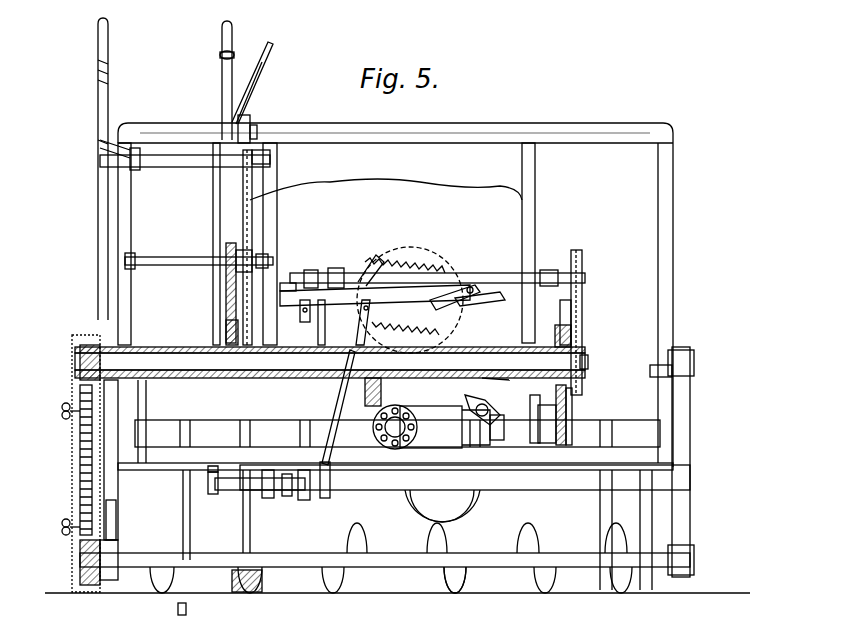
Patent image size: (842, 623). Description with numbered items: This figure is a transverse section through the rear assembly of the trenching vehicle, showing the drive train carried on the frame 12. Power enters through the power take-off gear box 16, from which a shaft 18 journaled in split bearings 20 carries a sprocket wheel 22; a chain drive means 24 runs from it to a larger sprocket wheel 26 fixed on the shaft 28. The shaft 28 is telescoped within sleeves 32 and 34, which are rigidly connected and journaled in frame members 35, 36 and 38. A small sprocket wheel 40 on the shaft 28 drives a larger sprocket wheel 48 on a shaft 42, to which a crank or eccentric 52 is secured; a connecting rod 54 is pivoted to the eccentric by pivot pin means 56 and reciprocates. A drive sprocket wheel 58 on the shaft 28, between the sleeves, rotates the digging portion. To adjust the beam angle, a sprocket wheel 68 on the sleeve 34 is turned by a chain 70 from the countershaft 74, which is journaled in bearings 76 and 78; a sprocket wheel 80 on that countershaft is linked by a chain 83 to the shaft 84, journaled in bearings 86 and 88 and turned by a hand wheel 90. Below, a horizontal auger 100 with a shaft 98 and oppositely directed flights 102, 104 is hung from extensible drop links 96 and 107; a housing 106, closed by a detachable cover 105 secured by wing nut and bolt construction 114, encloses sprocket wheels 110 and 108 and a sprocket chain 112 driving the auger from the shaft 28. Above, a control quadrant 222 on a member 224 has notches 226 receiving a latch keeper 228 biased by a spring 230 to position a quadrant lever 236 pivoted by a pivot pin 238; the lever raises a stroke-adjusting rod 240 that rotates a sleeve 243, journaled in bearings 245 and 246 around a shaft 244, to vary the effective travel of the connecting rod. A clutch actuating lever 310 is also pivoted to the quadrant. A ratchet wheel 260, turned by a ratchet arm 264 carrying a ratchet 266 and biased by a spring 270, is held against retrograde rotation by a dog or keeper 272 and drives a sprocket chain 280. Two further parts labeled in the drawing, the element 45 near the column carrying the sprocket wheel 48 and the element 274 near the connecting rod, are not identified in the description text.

The frame 12 is at (532, 118).
The power take-off gear box 16 is at (405, 450).
The shaft 18 is at (500, 470).
The split bearings 20 is at (540, 445).
The sprocket wheel 22 is at (560, 432).
The chain drive means 24 is at (573, 412).
The sprocket wheel 26 is at (568, 396).
The shaft 28 is at (572, 345).
The sleeve 32 is at (432, 380).
The sleeve 34 is at (350, 400).
The frame member 35 is at (528, 200).
The frame member 36 is at (278, 290).
The frame member 38 is at (132, 312).
The sprocket wheel 40 is at (586, 362).
The shaft 42 is at (470, 275).
The column 45 is at (582, 300).
The sprocket wheel 48 is at (582, 276).
The crank or eccentric 52 is at (311, 304).
The connecting rod 54 is at (325, 328).
The pivot pin means 56 is at (295, 290).
The drive sprocket wheel 58 is at (378, 378).
The sprocket wheel 68 is at (226, 335).
The chain 70 is at (232, 262).
The countershaft 74 is at (168, 258).
The bearing 76 is at (276, 262).
The bearing 78 is at (136, 256).
The sprocket wheel 80 is at (234, 252).
The chain 83 is at (243, 209).
The shaft 84 is at (168, 164).
The bearing 86 is at (271, 160).
The bearing 88 is at (140, 172).
The hand wheel 90 is at (109, 78).
The drop link 96 is at (112, 498).
The shaft 98 is at (226, 492).
The horizontal auger 100 is at (434, 582).
The flight 102 is at (250, 584).
The flight 104 is at (458, 586).
The detachable cover 105 is at (72, 470).
The housing 106 is at (66, 565).
The drop link 107 is at (690, 465).
The sprocket wheel 108 is at (90, 585).
The sprocket wheel 110 is at (72, 375).
The sprocket chain 112 is at (79, 440).
The wing nut and bolt construction 114 is at (56, 413).
The control quadrant 222 is at (250, 118).
The member 224 is at (326, 140).
The notches 226 is at (198, 611).
The latch keeper 228 is at (234, 56).
The spring 230 is at (256, 76).
The quadrant lever 236 is at (222, 56).
The pivot pin 238 is at (256, 128).
The stroke-adjusting rod 240 is at (213, 190).
The sleeve 243 is at (250, 492).
The shaft 244 is at (238, 492).
The bearing 245 is at (202, 490).
The bearing 246 is at (276, 500).
The ratchet wheel 260 is at (438, 252).
The ratchet arm 264 is at (370, 316).
The ratchet 266 is at (362, 282).
The spring 270 is at (478, 310).
The dog or keeper 272 is at (480, 285).
The link 274 is at (340, 392).
The sprocket chain 280 is at (440, 300).
The clutch actuating lever 310 is at (270, 44).